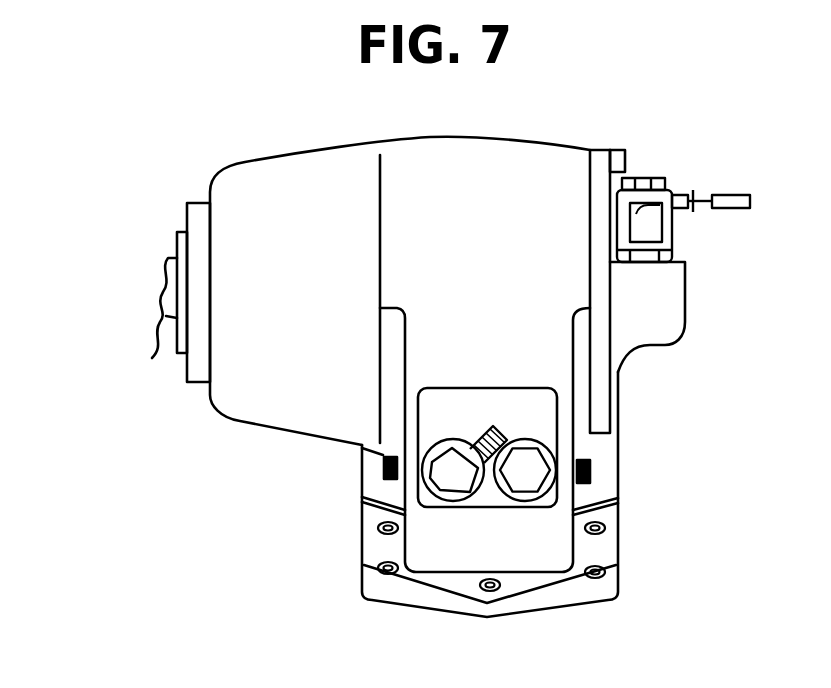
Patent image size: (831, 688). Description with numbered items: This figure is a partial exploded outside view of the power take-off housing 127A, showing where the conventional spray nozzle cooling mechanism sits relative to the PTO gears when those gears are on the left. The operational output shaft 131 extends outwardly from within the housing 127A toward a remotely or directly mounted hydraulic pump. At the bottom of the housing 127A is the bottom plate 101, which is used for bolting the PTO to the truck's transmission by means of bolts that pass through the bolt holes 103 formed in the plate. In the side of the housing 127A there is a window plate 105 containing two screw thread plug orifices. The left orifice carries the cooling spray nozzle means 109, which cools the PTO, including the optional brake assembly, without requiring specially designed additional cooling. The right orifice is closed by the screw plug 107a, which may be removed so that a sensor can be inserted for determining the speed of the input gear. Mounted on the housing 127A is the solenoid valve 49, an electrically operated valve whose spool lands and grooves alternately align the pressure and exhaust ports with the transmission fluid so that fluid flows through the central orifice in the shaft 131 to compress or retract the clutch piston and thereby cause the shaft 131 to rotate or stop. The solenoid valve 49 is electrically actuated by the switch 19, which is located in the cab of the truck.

The PTO housing 127A is at (417, 354).
The window plate 105 is at (455, 390).
The screw plug 107a is at (538, 468).
The cooling spray nozzle means 109 is at (450, 488).
The bolt holes 103 is at (386, 528).
The bottom plate 101 is at (606, 553).
The output shaft 131 is at (160, 322).
The solenoid valve 49 is at (665, 240).
The switch 19 is at (745, 210).